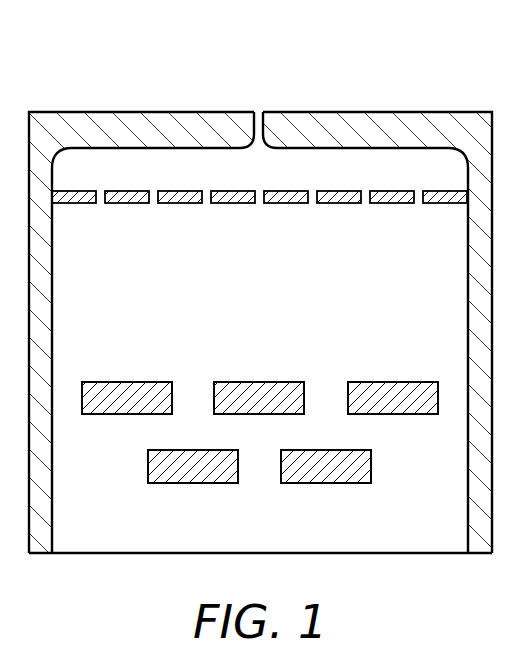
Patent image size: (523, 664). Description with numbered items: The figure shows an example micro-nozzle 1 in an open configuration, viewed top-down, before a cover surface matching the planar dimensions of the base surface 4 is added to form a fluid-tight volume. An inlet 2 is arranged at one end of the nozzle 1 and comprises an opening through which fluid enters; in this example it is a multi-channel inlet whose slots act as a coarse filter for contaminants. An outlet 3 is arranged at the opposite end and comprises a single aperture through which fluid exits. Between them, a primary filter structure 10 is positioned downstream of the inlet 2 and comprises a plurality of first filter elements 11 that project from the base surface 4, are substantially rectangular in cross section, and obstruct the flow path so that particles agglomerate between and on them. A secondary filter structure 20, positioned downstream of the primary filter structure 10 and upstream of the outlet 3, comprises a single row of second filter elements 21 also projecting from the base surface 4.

The nozzle 1 is at (69, 75).
The inlet 2 is at (412, 554).
The outlet 3 is at (257, 111).
The base surface 4 is at (266, 301).
The primary filter structure 10 is at (403, 371).
The first filter elements 11 is at (166, 494).
The secondary filter structure 20 is at (259, 166).
The second filter elements 21 is at (128, 204).